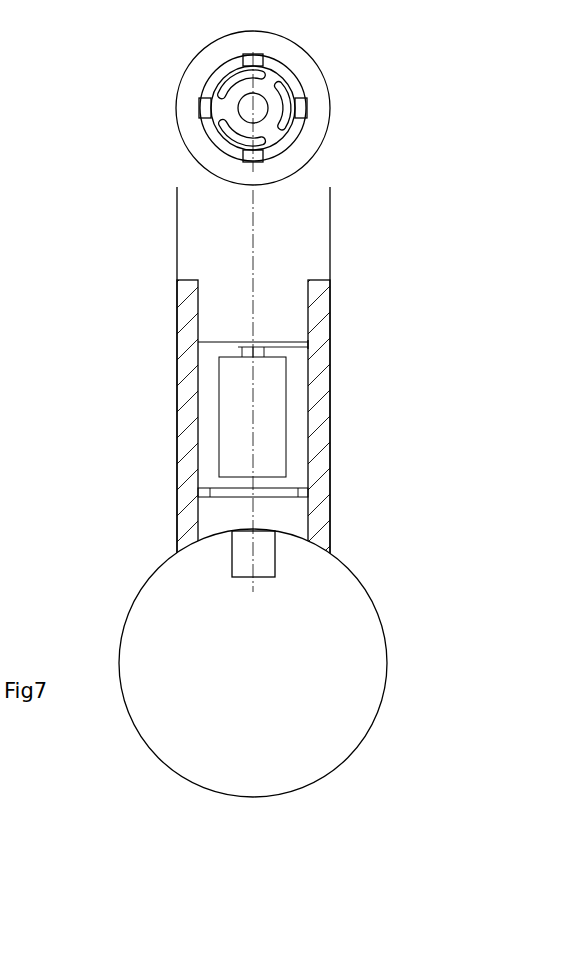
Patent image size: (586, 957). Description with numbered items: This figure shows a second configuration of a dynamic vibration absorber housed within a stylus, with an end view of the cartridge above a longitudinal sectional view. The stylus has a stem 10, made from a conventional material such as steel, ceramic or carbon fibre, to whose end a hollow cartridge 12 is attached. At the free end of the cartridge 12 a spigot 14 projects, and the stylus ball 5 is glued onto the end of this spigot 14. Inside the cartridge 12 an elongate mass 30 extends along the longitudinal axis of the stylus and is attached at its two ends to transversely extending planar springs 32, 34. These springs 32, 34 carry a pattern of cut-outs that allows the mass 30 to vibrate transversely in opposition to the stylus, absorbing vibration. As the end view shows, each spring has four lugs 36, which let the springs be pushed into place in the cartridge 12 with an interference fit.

The stylus ball 5 is at (190, 572).
The stem 10 is at (193, 231).
The hollow cartridge 12 is at (320, 102).
The spigot 14 is at (262, 550).
The elongate mass 30 is at (270, 417).
The planar spring 32 is at (268, 77).
The planar spring 34 is at (200, 496).
The lugs 36 is at (205, 107).